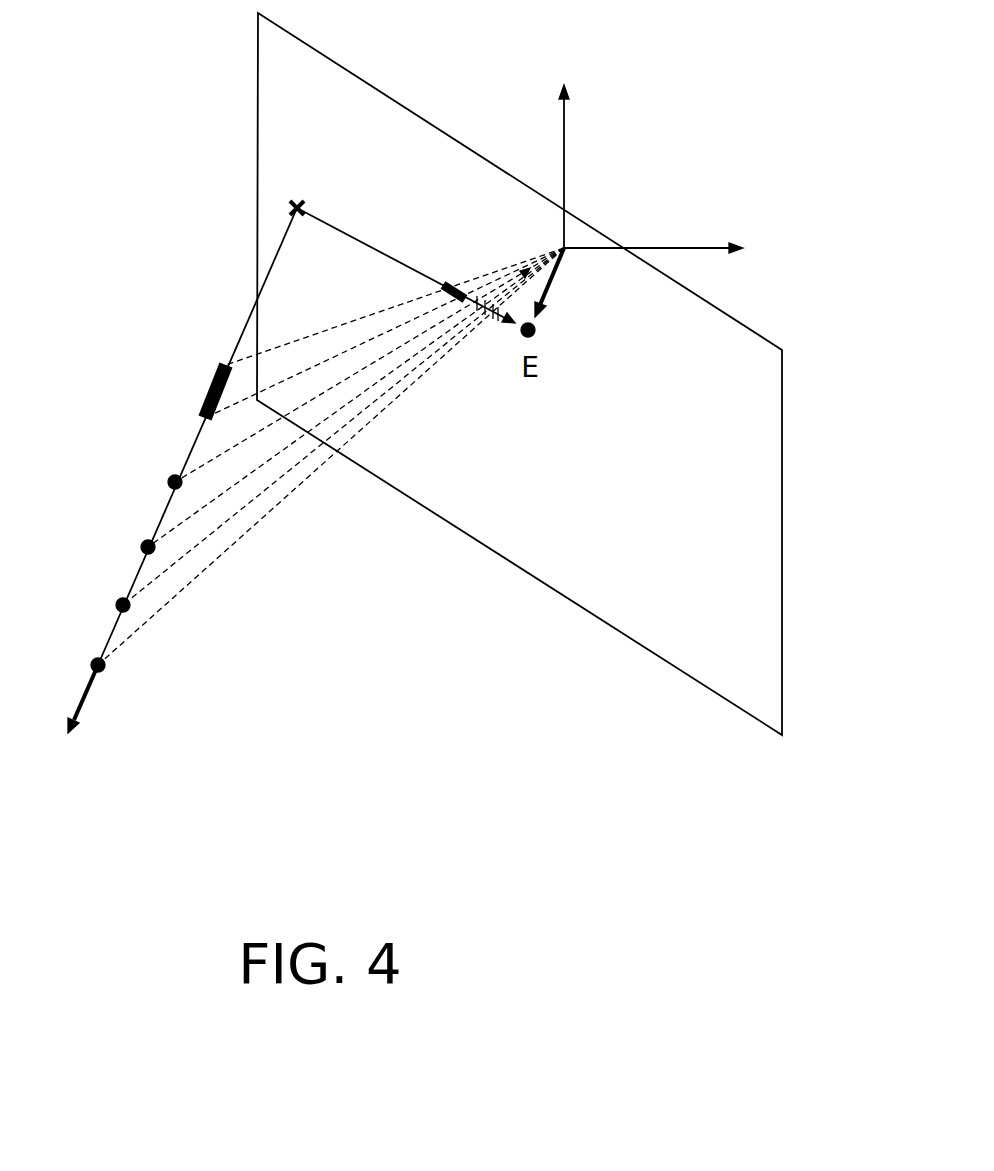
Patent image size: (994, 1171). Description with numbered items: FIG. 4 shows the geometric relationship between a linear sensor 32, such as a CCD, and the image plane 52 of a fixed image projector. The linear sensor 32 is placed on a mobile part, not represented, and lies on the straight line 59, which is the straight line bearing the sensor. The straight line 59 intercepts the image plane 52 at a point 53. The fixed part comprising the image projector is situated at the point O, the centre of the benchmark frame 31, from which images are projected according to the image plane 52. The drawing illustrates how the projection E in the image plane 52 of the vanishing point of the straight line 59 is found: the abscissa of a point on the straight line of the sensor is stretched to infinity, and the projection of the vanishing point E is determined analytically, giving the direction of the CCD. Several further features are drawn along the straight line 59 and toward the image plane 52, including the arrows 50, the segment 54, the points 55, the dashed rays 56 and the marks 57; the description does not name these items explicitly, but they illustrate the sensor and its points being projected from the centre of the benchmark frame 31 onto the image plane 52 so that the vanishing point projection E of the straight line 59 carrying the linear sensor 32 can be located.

The benchmark frame 31 is at (578, 117).
The linear sensor 32 is at (200, 388).
The direction arrow 50 is at (93, 715).
The image plane 52 is at (790, 573).
The point 53 is at (290, 210).
The projected object segment 54 is at (450, 285).
The sample points 55 is at (88, 658).
The projection rays 56 is at (273, 523).
The projected sample point marks 57 is at (497, 323).
The straight line 59 is at (232, 327).